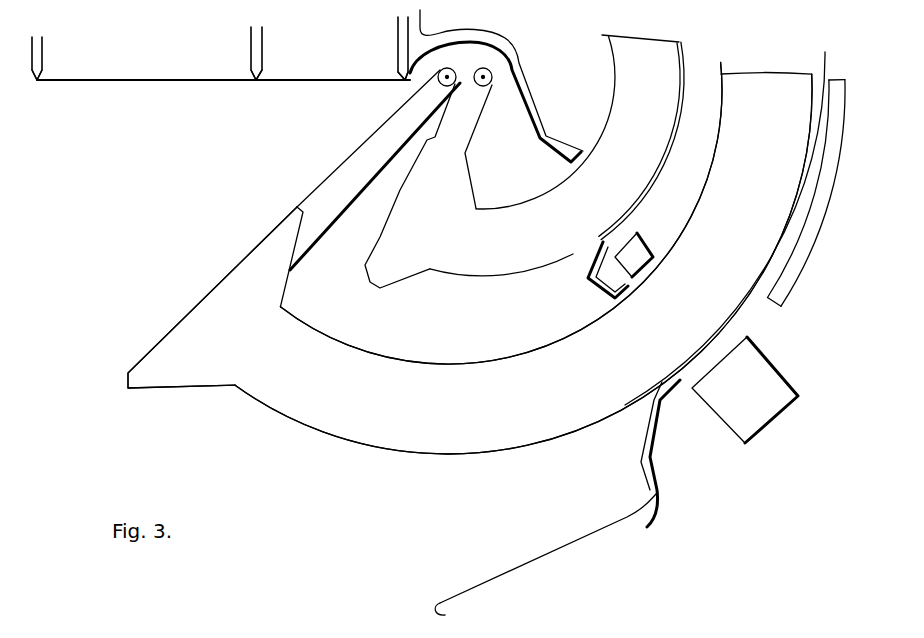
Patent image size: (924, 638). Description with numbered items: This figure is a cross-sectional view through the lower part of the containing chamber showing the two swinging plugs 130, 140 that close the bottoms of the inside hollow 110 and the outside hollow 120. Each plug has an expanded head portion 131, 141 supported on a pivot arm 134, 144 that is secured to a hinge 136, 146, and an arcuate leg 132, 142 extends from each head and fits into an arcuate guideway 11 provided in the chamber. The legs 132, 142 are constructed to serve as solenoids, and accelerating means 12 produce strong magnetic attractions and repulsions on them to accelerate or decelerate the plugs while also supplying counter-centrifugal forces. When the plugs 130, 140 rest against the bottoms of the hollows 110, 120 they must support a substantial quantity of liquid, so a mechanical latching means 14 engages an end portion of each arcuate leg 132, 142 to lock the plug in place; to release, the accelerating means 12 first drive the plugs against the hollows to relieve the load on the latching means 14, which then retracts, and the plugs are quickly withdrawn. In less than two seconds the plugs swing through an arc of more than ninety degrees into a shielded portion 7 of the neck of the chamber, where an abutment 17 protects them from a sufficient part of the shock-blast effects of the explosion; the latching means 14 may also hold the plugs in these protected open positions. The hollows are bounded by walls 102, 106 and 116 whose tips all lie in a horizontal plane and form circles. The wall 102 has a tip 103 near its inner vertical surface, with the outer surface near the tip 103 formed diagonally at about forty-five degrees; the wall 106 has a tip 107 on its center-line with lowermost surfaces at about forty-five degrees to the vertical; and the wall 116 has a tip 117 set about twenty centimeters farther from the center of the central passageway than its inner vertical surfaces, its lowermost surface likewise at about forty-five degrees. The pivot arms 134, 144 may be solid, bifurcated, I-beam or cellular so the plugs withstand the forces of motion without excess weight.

The shielded portion 7 is at (660, 494).
The arcuate guideway 11 is at (823, 64).
The accelerating means 12 is at (722, 133).
The mechanical latching means 14 is at (643, 245).
The abutment 17 is at (482, 590).
The wall 102 is at (44, 58).
The tip of wall 102 103 is at (40, 82).
The wall 106 is at (250, 48).
The tip of wall 106 107 is at (254, 82).
The inside hollow 110 is at (180, 41).
The wall 116 is at (396, 49).
The tip of wall 116 117 is at (406, 82).
The outside hollow 120 is at (354, 49).
The swinging plug 130 is at (420, 460).
The expanded head portion 131 is at (222, 300).
The arcuate leg 132 is at (556, 428).
The pivot arm 134 is at (358, 150).
The hinge 136 is at (449, 75).
The swinging plug 140 is at (490, 283).
The expanded head portion 141 is at (385, 236).
The arcuate leg 142 is at (556, 268).
The pivot arm 144 is at (475, 108).
The hinge 146 is at (487, 75).